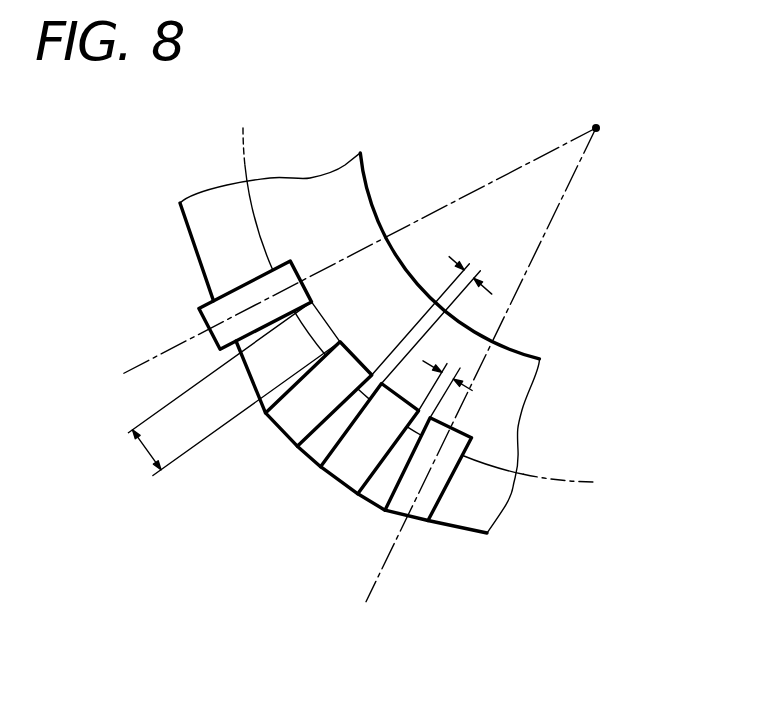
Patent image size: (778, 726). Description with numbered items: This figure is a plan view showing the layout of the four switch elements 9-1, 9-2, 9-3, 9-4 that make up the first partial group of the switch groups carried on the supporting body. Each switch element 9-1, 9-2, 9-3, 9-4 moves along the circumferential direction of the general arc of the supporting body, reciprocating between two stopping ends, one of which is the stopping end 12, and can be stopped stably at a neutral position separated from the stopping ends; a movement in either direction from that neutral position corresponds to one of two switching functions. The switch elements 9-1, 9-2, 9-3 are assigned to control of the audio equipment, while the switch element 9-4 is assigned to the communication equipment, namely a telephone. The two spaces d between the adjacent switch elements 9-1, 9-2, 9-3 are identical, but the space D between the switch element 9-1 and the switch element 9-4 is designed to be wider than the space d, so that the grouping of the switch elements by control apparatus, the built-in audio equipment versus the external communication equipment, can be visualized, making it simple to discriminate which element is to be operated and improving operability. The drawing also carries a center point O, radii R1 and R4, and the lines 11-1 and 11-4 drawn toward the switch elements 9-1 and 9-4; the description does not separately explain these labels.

The switch element 9-1 is at (317, 407).
The switch element 9-2 is at (363, 460).
The switch element 9-3 is at (428, 503).
The switch element 9-4 is at (242, 300).
The center line of coil 9-4 11-1 is at (531, 165).
The center line of coil 9-3 11-4 is at (557, 212).
The stopping end 12 is at (507, 380).
The rotation center O is at (615, 119).
The radius to coil R1 is at (363, 627).
The radius to coil R4 is at (100, 394).
The space D is at (228, 393).
The space d is at (433, 331).